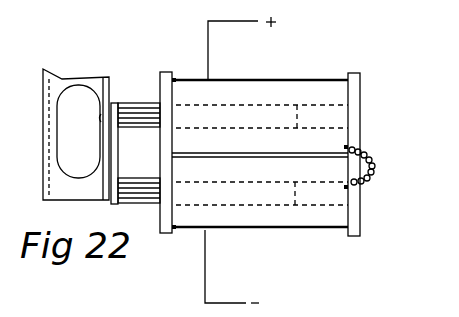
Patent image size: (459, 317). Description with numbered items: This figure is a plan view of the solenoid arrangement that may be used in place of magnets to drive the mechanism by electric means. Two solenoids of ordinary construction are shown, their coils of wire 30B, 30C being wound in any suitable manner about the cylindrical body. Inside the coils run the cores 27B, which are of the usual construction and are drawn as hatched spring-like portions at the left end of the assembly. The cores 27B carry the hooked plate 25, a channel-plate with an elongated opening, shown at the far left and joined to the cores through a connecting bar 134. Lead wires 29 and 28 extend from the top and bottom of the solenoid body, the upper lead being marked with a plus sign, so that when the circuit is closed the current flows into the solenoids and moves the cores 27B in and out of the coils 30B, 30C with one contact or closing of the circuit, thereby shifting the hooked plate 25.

The hooked plate 25 is at (76, 135).
The cores 27B is at (143, 128).
The bar 134 is at (115, 204).
The positive lead wire 29 is at (208, 48).
The negative lead wire 28 is at (205, 258).
The coil of wire 30B is at (361, 145).
The coil of wire 30C is at (361, 207).